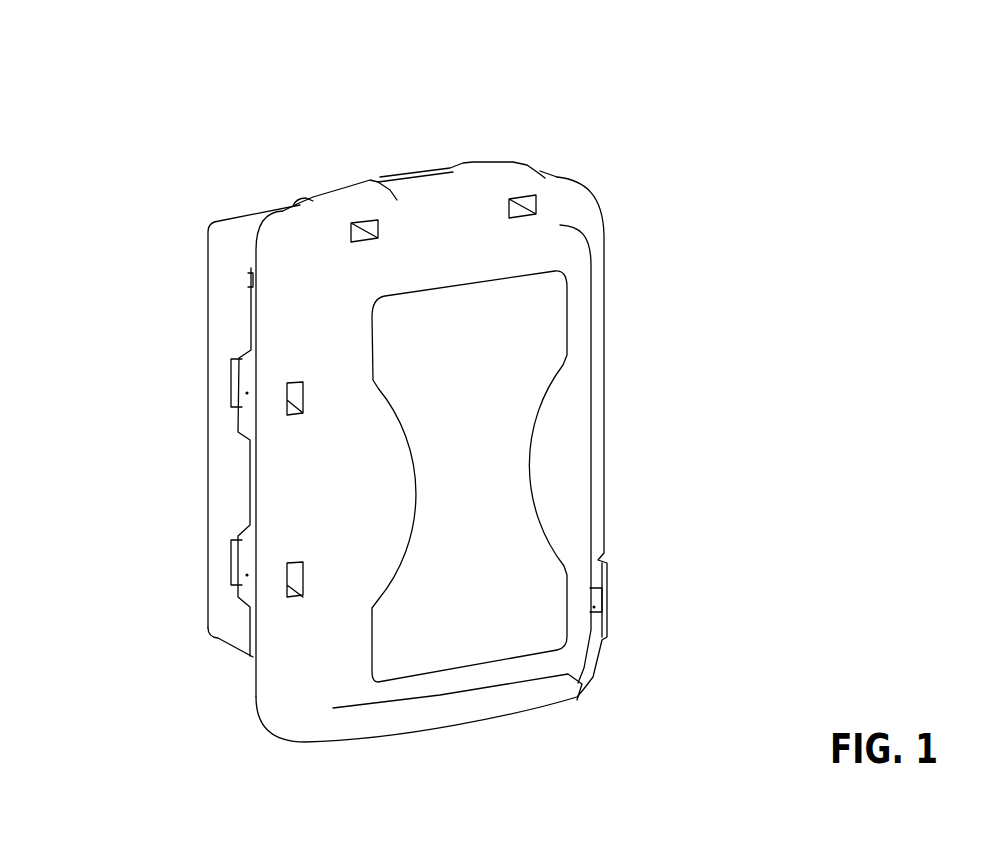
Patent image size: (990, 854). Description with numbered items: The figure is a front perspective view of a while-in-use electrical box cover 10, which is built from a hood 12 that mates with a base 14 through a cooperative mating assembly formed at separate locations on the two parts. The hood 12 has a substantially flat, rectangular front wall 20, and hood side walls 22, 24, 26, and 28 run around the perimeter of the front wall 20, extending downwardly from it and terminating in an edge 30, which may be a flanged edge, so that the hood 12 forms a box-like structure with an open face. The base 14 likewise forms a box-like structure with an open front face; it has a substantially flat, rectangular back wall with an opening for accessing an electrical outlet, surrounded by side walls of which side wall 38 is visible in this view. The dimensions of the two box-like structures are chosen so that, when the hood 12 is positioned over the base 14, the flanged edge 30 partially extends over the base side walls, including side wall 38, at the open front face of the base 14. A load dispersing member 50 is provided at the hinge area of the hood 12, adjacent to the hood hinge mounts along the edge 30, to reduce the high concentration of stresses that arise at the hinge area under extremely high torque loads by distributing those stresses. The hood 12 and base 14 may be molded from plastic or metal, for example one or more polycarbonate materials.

The electrical box cover 10 is at (717, 63).
The hood 12 is at (616, 302).
The base 14 is at (200, 492).
The front wall 20 is at (568, 445).
The hood side wall 22 is at (315, 637).
The hood side wall 24 is at (600, 357).
The hood side wall 26 is at (563, 173).
The hood side wall 28 is at (452, 700).
The edge 30 is at (253, 657).
The side wall 38 is at (212, 412).
The load dispersing member 50 is at (233, 585).